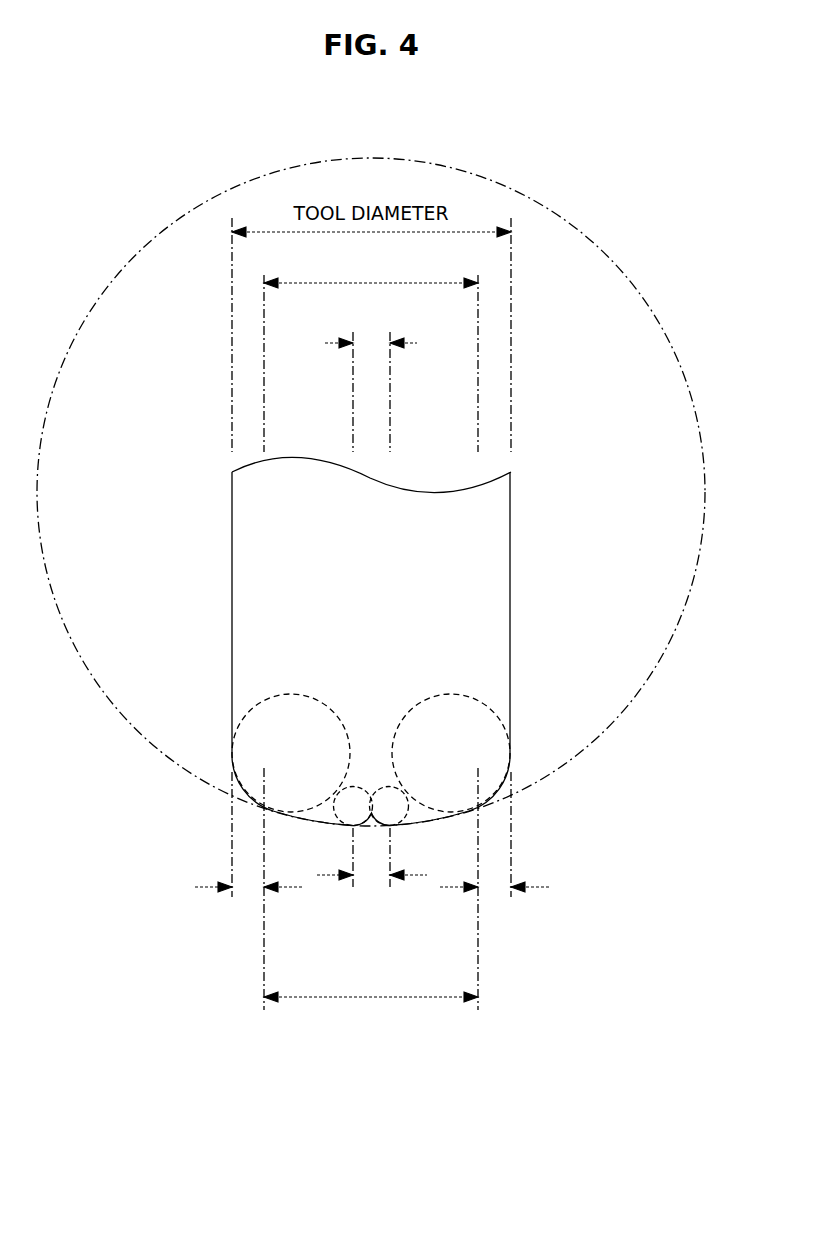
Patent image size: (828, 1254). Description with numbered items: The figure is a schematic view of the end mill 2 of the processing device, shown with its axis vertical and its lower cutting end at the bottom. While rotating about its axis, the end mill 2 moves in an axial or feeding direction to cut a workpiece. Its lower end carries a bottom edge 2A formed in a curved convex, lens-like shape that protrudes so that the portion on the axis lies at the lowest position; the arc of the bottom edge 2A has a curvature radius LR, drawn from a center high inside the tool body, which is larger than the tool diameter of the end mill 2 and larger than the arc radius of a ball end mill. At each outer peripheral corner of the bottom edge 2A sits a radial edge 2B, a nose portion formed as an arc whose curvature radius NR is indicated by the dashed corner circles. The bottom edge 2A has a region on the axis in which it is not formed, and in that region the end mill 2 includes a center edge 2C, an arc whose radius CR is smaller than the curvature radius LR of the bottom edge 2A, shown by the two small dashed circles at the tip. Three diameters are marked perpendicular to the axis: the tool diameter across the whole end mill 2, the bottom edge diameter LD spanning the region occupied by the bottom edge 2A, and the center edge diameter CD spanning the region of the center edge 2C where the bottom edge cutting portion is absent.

The end mill 2 is at (512, 556).
The bottom edge 2A is at (370, 999).
The radial edge 2B is at (247, 889).
The center edge 2C is at (370, 877).
The curvature radius of the bottom edge LR is at (432, 816).
The curvature radius of the radial edge NR is at (493, 786).
The radius of the center edge arc portion CR is at (389, 810).
The bottom edge diameter LD is at (371, 269).
The center edge diameter CD is at (371, 328).